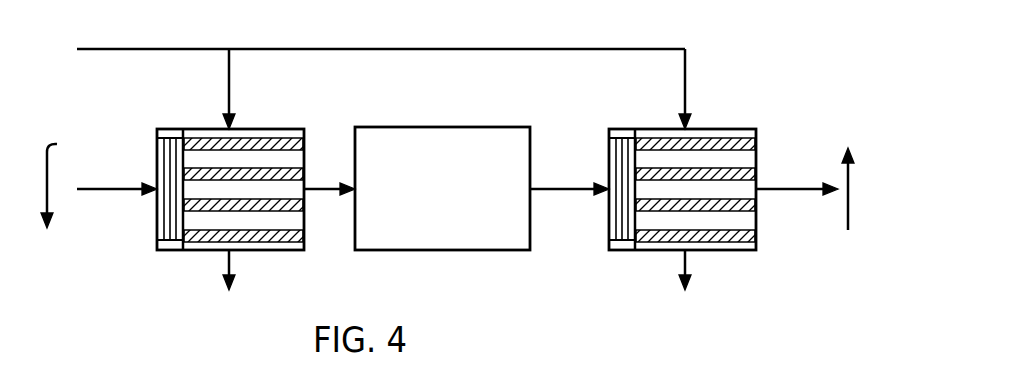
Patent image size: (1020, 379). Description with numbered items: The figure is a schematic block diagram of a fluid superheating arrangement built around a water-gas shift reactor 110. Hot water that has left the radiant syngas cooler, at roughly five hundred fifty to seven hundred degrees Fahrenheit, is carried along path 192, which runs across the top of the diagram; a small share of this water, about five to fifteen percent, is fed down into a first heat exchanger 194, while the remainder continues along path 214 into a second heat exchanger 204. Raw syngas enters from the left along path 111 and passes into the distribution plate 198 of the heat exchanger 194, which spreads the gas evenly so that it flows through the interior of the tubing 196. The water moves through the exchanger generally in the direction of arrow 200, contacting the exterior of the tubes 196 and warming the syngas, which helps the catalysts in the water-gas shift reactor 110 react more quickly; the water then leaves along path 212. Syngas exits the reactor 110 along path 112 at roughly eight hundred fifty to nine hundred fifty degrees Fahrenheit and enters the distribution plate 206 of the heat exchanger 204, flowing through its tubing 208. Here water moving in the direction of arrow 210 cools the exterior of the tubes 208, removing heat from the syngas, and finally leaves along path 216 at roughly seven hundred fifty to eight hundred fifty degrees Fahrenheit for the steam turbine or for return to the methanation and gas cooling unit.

The water-gas shift reactor 110 is at (445, 127).
The path 111 is at (135, 186).
The path 112 is at (587, 187).
The path 192 is at (196, 49).
The heat exchanger 194 is at (296, 122).
The tubing 196 is at (213, 140).
The distribution plate 198 is at (160, 128).
The arrow 200 is at (68, 178).
The heat exchanger 204 is at (742, 121).
The distribution plate 206 is at (620, 129).
The tubing 208 is at (673, 135).
The arrow 210 is at (848, 191).
The path 212 is at (232, 264).
The path 214 is at (685, 72).
The path 216 is at (682, 263).